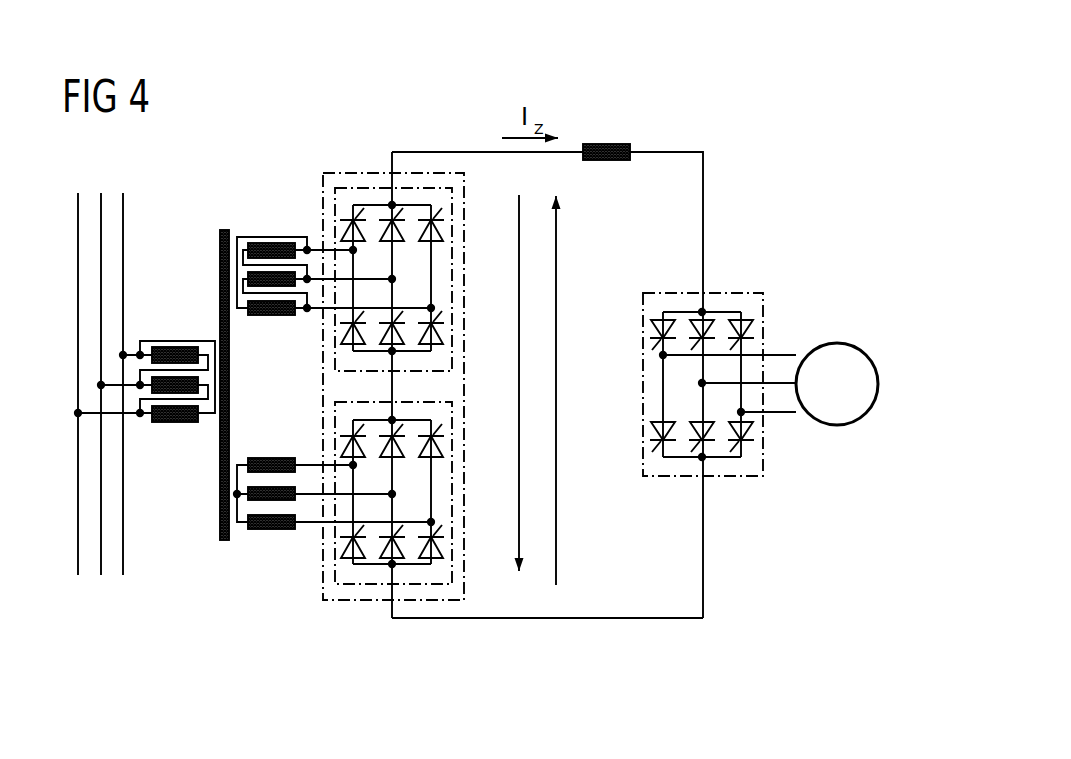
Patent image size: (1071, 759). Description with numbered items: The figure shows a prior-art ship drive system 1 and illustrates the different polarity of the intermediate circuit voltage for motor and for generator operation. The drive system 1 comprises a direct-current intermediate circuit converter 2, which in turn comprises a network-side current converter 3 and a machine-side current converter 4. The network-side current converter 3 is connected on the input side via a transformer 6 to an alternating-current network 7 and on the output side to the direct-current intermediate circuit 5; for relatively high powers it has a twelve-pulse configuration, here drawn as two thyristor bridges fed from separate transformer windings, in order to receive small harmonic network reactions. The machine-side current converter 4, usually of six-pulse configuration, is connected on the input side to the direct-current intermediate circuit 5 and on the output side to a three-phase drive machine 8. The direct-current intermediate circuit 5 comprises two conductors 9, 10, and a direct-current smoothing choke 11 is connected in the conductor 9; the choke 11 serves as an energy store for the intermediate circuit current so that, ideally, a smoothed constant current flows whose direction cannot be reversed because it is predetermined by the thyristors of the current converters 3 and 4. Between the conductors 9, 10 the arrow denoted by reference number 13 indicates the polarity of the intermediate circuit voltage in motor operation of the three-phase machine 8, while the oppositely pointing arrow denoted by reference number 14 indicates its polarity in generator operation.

The drive system 1 is at (791, 171).
The direct-current intermediate circuit converter 2 is at (759, 560).
The network-side current converter 3 is at (353, 171).
The machine-side current converter 4 is at (736, 292).
The direct-current intermediate circuit 5 is at (522, 419).
The transformer 6 is at (220, 487).
The alternating-current network 7 is at (125, 557).
The three-phase drive machine 8 is at (831, 344).
The conductor 9 is at (662, 150).
The conductor 10 is at (586, 620).
The direct-current smoothing choke 11 is at (607, 143).
The arrow indicating polarity in motor operation 13 is at (519, 195).
The arrow indicating polarity in generator operation 14 is at (557, 244).